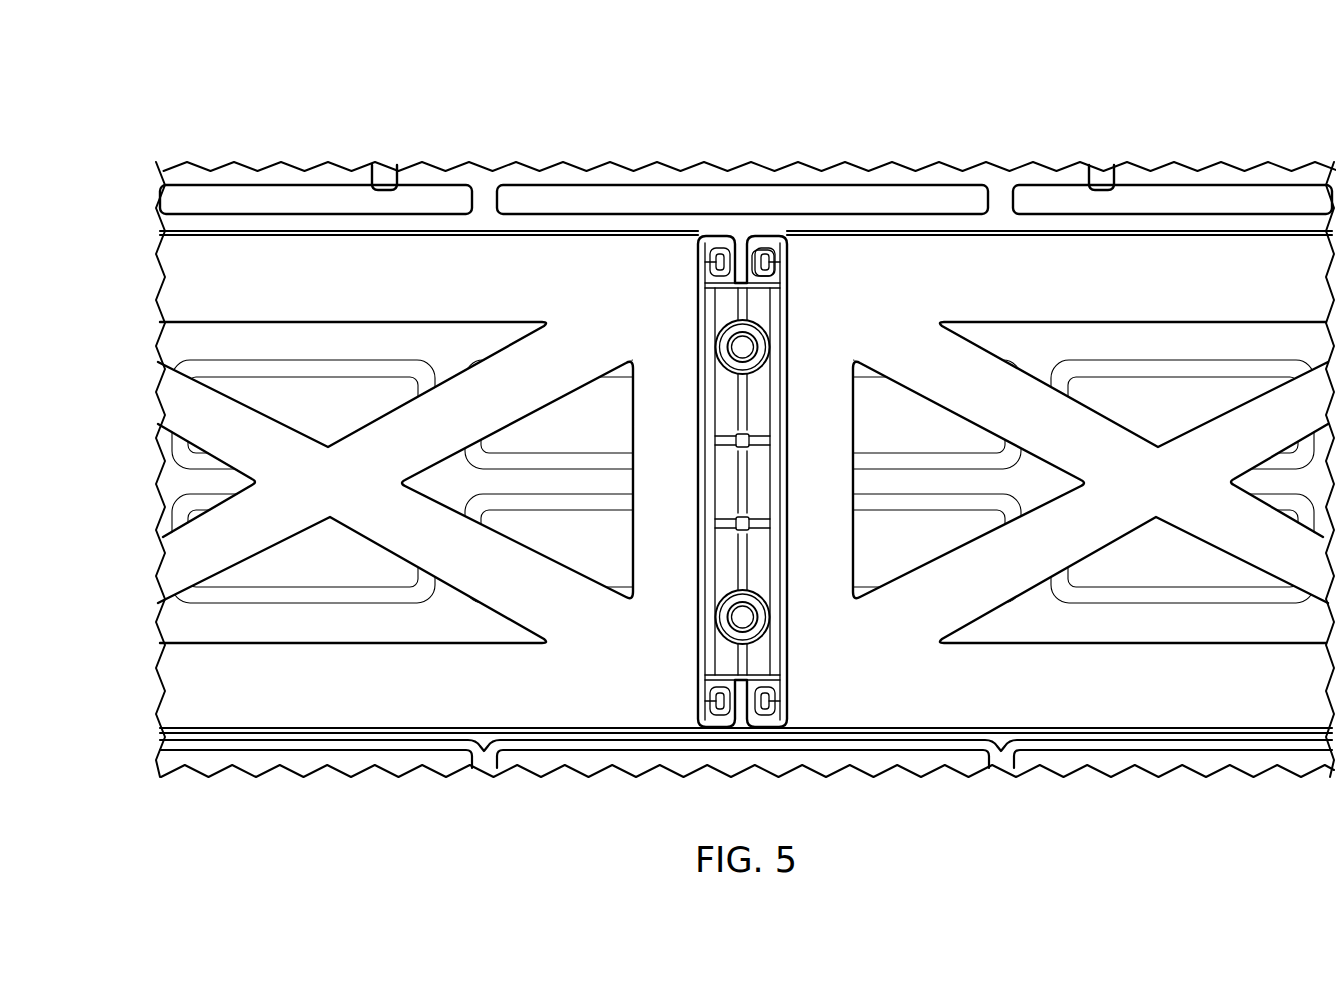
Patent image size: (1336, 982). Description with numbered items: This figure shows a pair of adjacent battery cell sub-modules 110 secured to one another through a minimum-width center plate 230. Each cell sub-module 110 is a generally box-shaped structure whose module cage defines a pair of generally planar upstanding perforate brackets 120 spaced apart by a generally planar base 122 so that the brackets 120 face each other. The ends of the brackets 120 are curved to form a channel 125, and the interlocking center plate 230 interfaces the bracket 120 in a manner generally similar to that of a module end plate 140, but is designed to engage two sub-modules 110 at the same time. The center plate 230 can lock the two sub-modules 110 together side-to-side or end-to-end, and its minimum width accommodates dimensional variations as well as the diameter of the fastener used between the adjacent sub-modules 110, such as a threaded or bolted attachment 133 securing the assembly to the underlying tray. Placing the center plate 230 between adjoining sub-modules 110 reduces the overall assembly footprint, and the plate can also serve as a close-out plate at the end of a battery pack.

The cell sub-module 110 is at (748, 131).
The bracket 120 is at (962, 237).
The base 122 is at (347, 295).
The channel 125 is at (770, 248).
The attachment 133 is at (735, 348).
The end plate 140 is at (787, 305).
The center plate 230 is at (747, 781).